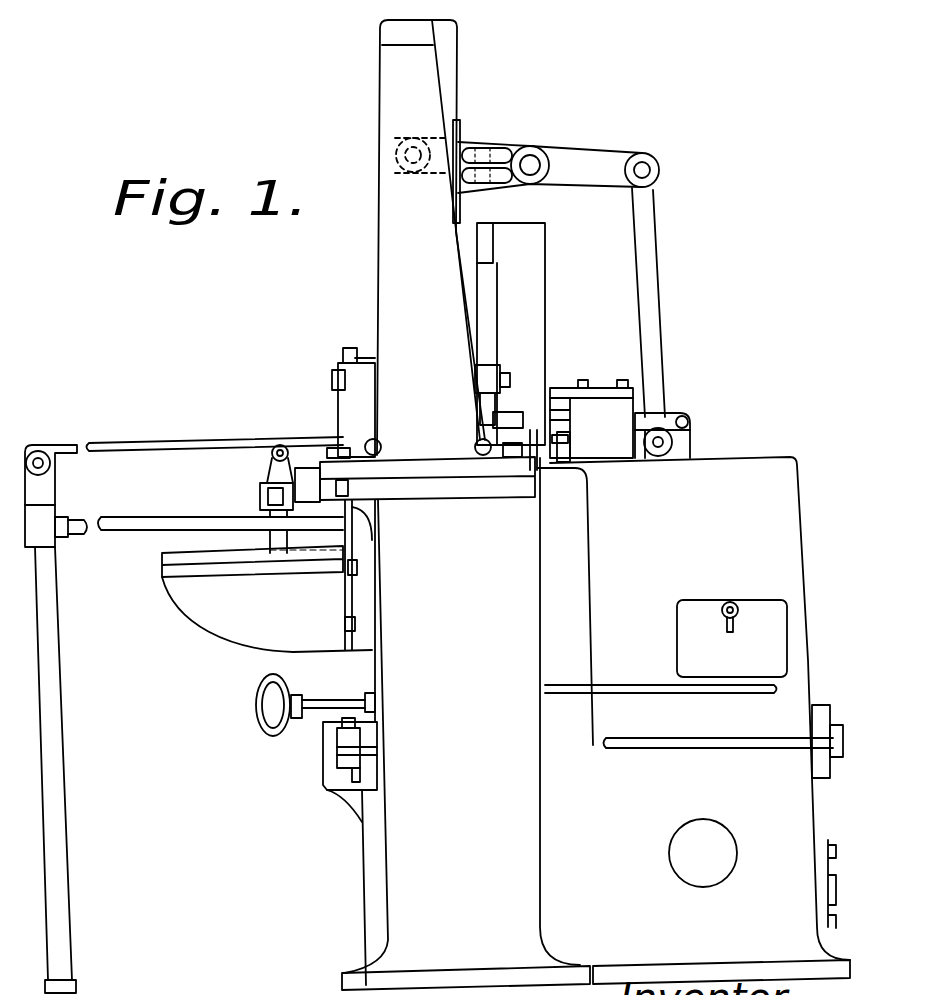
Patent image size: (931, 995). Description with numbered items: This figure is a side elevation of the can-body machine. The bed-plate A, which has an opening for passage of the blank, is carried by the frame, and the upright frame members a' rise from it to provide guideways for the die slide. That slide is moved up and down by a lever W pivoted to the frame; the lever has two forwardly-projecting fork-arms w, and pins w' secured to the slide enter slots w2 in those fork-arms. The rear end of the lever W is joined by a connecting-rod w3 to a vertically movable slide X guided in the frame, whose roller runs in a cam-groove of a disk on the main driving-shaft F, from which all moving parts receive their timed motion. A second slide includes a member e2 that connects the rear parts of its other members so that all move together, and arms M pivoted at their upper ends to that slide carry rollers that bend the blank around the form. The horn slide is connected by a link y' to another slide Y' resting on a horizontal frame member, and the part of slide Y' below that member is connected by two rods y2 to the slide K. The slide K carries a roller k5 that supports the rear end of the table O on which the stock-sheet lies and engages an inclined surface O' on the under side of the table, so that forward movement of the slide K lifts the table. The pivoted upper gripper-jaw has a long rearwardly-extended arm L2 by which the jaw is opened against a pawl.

The upright frame member a' is at (428, 237).
The pin w' is at (407, 126).
The slot w2 is at (418, 160).
The fork-arm w is at (556, 131).
The lever W is at (558, 167).
The connecting-rod w3 is at (661, 287).
The slide member e2 is at (511, 334).
The arm M is at (472, 293).
The rearwardly-extended arm L2 is at (556, 410).
The slide Y' is at (680, 432).
The link y' is at (682, 401).
The slide X is at (694, 708).
The bed-plate A is at (453, 490).
The main driving-shaft F is at (322, 756).
The inclined surface O' is at (184, 719).
The table O is at (215, 430).
The slide K is at (265, 486).
The roller k5 is at (282, 444).
The rod y2 is at (307, 540).